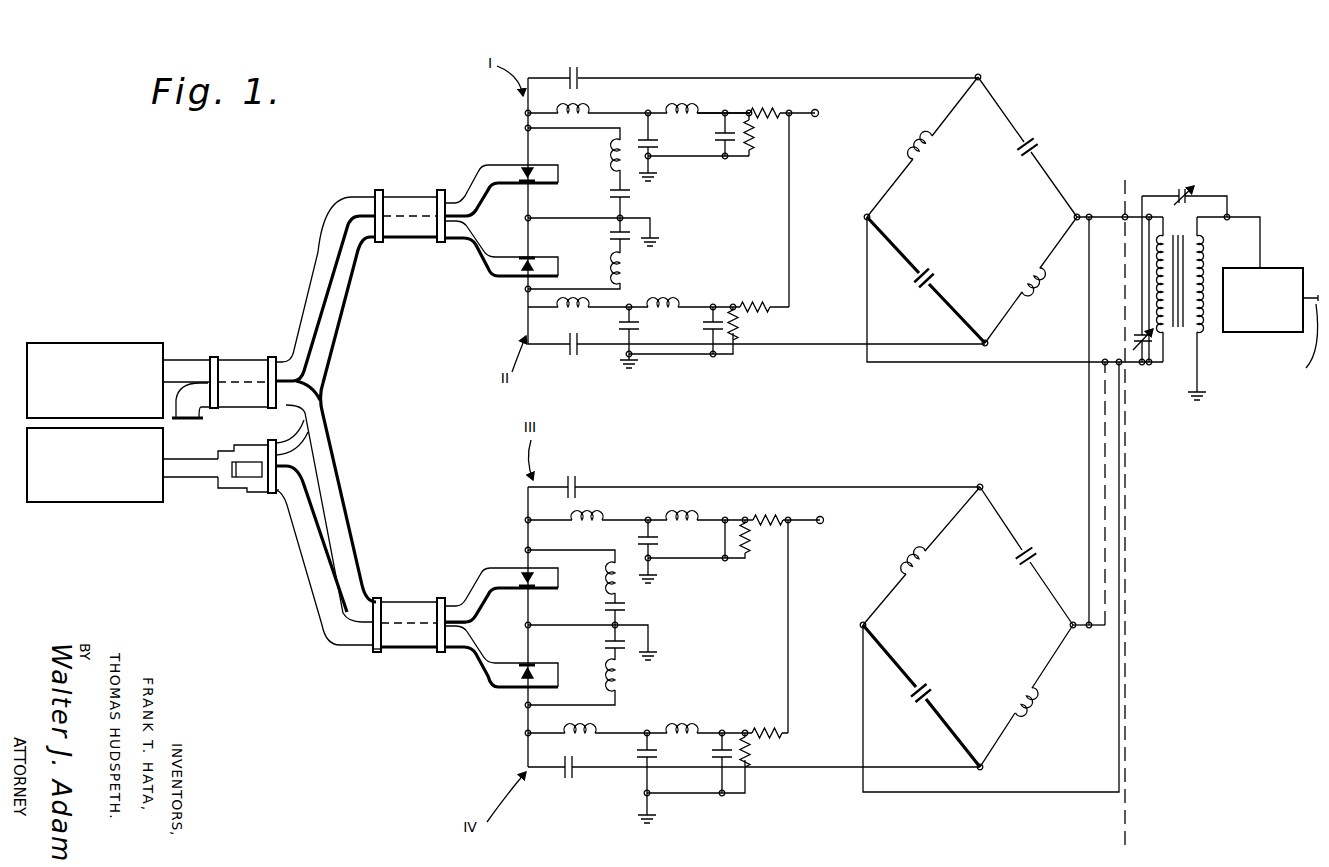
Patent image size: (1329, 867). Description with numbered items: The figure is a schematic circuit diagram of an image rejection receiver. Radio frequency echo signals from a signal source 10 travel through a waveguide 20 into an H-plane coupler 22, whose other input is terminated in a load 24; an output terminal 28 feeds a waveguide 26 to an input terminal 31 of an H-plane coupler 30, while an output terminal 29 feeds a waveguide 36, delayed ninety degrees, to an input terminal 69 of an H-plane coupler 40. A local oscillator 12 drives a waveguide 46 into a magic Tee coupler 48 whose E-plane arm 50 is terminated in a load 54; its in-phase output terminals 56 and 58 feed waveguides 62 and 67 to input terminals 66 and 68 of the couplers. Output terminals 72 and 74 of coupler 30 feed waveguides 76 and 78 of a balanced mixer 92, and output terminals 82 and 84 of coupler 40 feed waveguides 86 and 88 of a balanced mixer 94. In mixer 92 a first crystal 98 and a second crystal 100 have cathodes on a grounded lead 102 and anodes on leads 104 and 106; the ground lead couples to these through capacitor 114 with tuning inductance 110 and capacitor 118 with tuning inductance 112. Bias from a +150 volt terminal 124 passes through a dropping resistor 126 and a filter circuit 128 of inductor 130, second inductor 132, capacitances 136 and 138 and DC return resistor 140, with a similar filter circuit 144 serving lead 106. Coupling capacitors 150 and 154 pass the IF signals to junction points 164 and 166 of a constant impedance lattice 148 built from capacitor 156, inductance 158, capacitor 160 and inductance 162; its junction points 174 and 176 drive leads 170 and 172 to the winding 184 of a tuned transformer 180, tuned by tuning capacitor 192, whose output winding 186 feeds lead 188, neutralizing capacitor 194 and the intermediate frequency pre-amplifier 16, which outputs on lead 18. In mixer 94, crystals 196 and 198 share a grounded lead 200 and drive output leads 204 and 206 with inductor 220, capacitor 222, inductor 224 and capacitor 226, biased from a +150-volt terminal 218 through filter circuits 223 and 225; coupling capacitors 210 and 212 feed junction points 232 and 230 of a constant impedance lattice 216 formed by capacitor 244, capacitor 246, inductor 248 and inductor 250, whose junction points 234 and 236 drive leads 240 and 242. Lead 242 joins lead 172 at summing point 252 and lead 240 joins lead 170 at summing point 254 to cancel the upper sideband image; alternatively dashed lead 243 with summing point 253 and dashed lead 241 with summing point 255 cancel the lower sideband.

The signal source 10 is at (95, 366).
The local oscillator 12 is at (95, 481).
The intermediate frequency pre-amplifier 16 is at (1263, 283).
The lead 18 is at (1272, 330).
The waveguide 20 is at (186, 353).
The H-plane coupler 22 is at (239, 363).
The load 24 is at (191, 411).
The waveguide 26 is at (325, 289).
The output terminal 28 is at (271, 362).
The output terminal 29 is at (276, 448).
The H-plane coupler 30 is at (410, 198).
The input terminal 31 is at (368, 198).
The waveguide 36 is at (330, 513).
The H-plane coupler 40 is at (409, 607).
The waveguide 46 is at (190, 486).
The magic Tee coupler 48 is at (242, 452).
The E-plane arm 50 is at (247, 495).
The load 54 is at (227, 508).
The output terminal 56 is at (301, 437).
The output terminal 58 is at (268, 520).
The waveguide 62 is at (336, 419).
The input terminal 66 is at (385, 257).
The waveguide 67 is at (325, 567).
The input terminal 68 is at (391, 655).
The input terminal 69 is at (384, 578).
The output terminal 72 is at (471, 209).
The output terminal 74 is at (448, 233).
The waveguide 76 is at (501, 166).
The waveguide 78 is at (501, 272).
The output terminal 82 is at (452, 601).
The output terminal 84 is at (456, 661).
The waveguide 86 is at (501, 574).
The waveguide 88 is at (501, 672).
The balanced mixer 92 is at (525, 176).
The balanced mixer 94 is at (492, 626).
The first crystal 98 is at (543, 188).
The second crystal 100 is at (562, 268).
The grounded lead 102 is at (619, 224).
The lead 104 is at (671, 201).
The lead 106 is at (641, 308).
The tuning inductance 110 is at (574, 159).
The tuning inductance 112 is at (595, 270).
The capacitor 114 is at (639, 205).
The capacitor 118 is at (593, 235).
The +150 volt terminal 124 is at (841, 130).
The dropping resistor 126 is at (780, 194).
The filter circuit 128 is at (725, 99).
The inductor 130 is at (671, 98).
The second inductor 132 is at (596, 98).
The capacitance 136 is at (698, 136).
The capacitance 138 is at (636, 146).
The resistor 140 is at (762, 148).
The filter circuit 144 is at (694, 298).
The constant impedance lattice 148 is at (980, 203).
The coupling capacitor 150 is at (753, 66).
The second coupling capacitor 154 is at (756, 359).
The capacitor 156 is at (1037, 147).
The inductance 158 is at (924, 147).
The capacitor 160 is at (926, 280).
The inductance 162 is at (1031, 280).
The junction point 164 is at (1008, 68).
The junction point 166 is at (1015, 343).
The lead 170 is at (1111, 247).
The lead 172 is at (1015, 306).
The junction point 174 is at (1050, 210).
The junction point 176 is at (895, 211).
The tuned transformer 180 is at (1169, 252).
The winding 184 is at (1184, 305).
The output winding 186 is at (1215, 308).
The lead 188 is at (1250, 220).
The tuning capacitor 192 is at (1152, 356).
The neutralizing capacitor 194 is at (1183, 253).
The crystal 196 is at (554, 682).
The crystal 198 is at (559, 569).
The grounded lead 200 is at (674, 623).
The output lead 204 is at (754, 787).
The output lead 206 is at (754, 462).
The coupling capacitor 210 is at (588, 779).
The coupling capacitor 212 is at (598, 476).
The constant impedance lattice 216 is at (985, 615).
The +150-volt terminal 218 is at (846, 538).
The inductor 220 is at (600, 682).
The capacitor 222 is at (592, 642).
The filter circuit 223 is at (710, 534).
The inductor 224 is at (571, 576).
The filter circuit 225 is at (658, 744).
The capacitor 226 is at (645, 615).
The junction point 230 is at (976, 467).
The junction point 232 is at (1010, 775).
The junction point 234 is at (1090, 641).
The junction point 236 is at (899, 619).
The lead 240 is at (1072, 422).
The dashed lead 241 is at (1131, 493).
The lead 242 is at (1028, 577).
The dashed lead 243 is at (1163, 720).
The capacitor 244 is at (926, 696).
The capacitor 246 is at (1031, 556).
The inductor 248 is at (922, 556).
The inductor 250 is at (1030, 696).
The summing point 252 is at (1108, 340).
The summing point 253 is at (1136, 506).
The summing point 254 is at (1086, 196).
The summing point 255 is at (1083, 372).